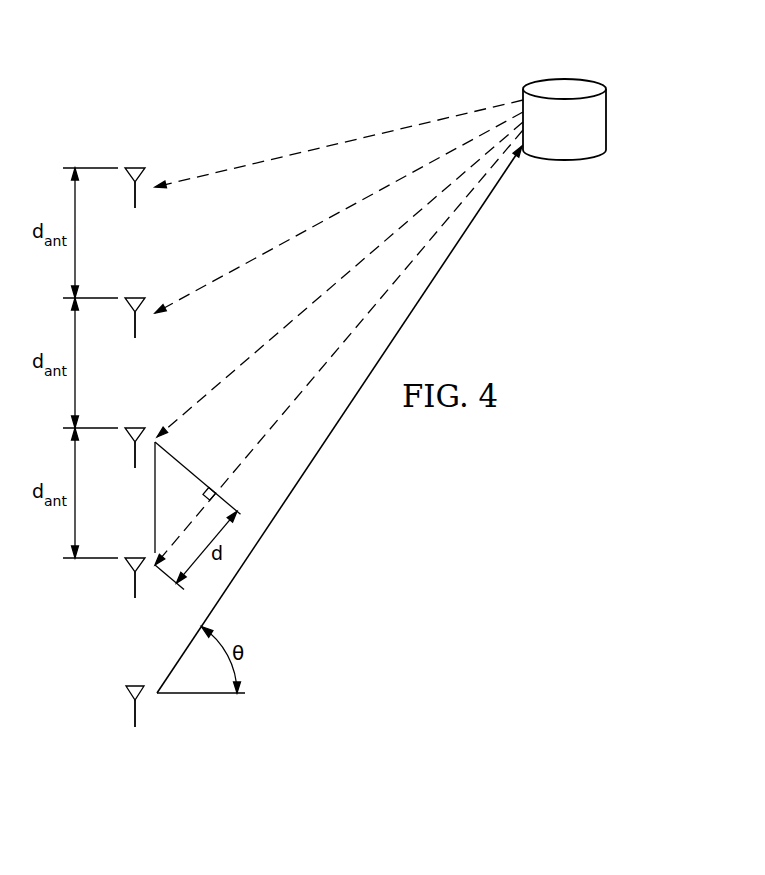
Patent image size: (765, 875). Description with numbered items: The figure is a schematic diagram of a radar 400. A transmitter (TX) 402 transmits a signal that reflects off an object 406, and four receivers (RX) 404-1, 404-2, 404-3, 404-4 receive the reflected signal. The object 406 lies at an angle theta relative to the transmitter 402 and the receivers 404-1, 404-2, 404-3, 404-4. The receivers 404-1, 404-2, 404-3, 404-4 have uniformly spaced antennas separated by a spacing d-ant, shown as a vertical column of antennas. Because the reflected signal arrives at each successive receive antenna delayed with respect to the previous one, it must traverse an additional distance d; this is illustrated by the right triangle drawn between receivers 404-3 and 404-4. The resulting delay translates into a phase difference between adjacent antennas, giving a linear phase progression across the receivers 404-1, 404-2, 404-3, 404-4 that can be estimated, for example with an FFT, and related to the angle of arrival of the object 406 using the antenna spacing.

The radar 400 is at (250, 63).
The transmitter (TX) 402 is at (130, 685).
The receiver (RX) 404-1 is at (130, 167).
The receiver (RX) 404-2 is at (130, 297).
The receiver (RX) 404-3 is at (130, 427).
The receiver (RX) 404-4 is at (130, 557).
The object 406 is at (566, 78).